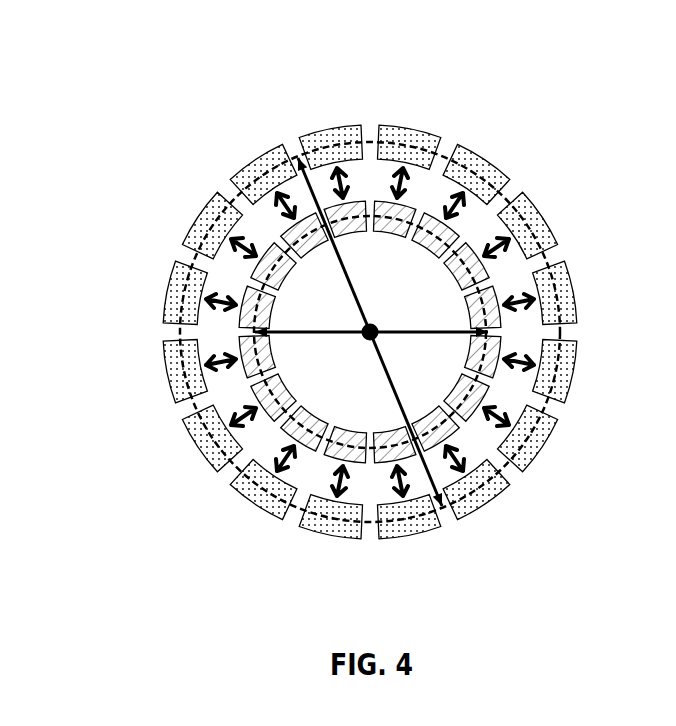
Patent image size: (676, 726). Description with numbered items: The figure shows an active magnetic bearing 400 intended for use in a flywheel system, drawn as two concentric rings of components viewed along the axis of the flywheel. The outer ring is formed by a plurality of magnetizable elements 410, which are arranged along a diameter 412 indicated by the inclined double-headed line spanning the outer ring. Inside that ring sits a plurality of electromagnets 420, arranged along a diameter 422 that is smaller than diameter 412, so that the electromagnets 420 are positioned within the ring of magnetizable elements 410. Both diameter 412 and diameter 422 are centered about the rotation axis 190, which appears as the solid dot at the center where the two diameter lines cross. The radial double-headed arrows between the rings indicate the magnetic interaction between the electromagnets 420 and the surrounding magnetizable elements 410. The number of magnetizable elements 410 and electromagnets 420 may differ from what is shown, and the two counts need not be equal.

The active magnetic bearing 400 is at (100, 98).
The magnetizable elements 410 is at (198, 221).
The diameter 412 is at (344, 270).
The electromagnets 420 is at (462, 278).
The diameter 422 is at (303, 332).
The rotation axis 190 is at (374, 340).